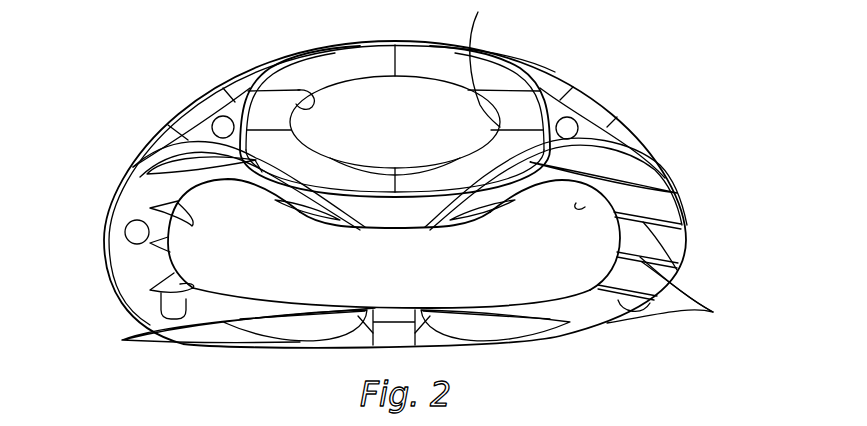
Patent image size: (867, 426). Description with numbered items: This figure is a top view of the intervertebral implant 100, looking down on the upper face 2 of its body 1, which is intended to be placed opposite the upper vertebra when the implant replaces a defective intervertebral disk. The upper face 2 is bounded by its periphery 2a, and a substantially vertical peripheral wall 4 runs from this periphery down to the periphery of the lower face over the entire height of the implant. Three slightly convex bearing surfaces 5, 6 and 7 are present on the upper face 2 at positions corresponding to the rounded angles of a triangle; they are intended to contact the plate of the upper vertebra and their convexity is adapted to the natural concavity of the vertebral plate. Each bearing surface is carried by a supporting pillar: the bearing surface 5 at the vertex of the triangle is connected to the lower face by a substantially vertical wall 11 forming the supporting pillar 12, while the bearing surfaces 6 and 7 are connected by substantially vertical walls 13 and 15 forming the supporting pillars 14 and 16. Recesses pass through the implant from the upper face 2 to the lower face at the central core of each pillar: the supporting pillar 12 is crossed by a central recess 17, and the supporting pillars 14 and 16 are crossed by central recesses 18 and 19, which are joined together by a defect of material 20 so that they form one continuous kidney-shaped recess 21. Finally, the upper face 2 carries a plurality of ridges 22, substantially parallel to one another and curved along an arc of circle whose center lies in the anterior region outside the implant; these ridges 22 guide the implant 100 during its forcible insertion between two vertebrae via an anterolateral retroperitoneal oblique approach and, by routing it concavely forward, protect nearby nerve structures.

The implant 100 is at (668, 84).
The body 1 is at (587, 78).
The upper face 2 is at (515, 72).
The periphery 2a is at (187, 97).
The peripheral wall 4 is at (472, 345).
The bearing surface 5 is at (423, 66).
The bearing surface 6 is at (130, 261).
The bearing surface 7 is at (672, 243).
The substantially vertical wall 11 is at (306, 90).
The supporting pillar 12 is at (309, 42).
The substantially vertical wall 13 is at (193, 225).
The supporting pillar 14 is at (98, 223).
The substantially vertical wall 15 is at (585, 207).
The supporting pillar 16 is at (690, 191).
The central recess 17 is at (406, 124).
The central recess 18 is at (246, 246).
The central recess 19 is at (573, 246).
The defect of material 20 is at (406, 282).
The kidney-shaped recess 21 is at (498, 302).
The ridges 22 is at (419, 176).